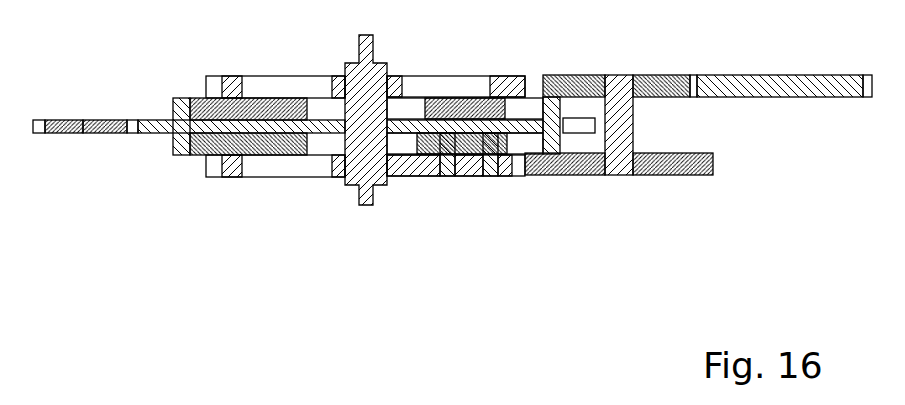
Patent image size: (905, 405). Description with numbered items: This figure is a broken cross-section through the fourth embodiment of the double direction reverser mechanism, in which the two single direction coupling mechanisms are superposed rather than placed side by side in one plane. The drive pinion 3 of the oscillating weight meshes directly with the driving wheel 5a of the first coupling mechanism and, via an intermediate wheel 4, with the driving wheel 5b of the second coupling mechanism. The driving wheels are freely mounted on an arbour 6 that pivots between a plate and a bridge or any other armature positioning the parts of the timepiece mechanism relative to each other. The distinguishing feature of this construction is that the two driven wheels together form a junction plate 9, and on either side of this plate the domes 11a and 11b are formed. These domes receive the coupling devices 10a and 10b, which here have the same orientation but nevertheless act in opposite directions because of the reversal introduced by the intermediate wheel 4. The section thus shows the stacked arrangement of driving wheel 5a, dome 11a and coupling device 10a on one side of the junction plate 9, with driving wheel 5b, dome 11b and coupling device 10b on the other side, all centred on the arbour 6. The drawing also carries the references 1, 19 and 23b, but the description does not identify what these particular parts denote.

The input shaft / rack bar 1 is at (106, 119).
The drive pinion 3 is at (751, 78).
The intermediate wheel 4 is at (714, 128).
The driving wheel 5a is at (506, 77).
The driving wheel 5b is at (237, 172).
The arbour 6 is at (355, 65).
The junction plate 9 is at (144, 152).
The coupling device 10a is at (215, 106).
The coupling device 10b is at (294, 150).
The dome 11a is at (310, 100).
The dome 11b is at (526, 152).
The flange block 19 is at (182, 135).
The spacer ring 23b is at (446, 172).